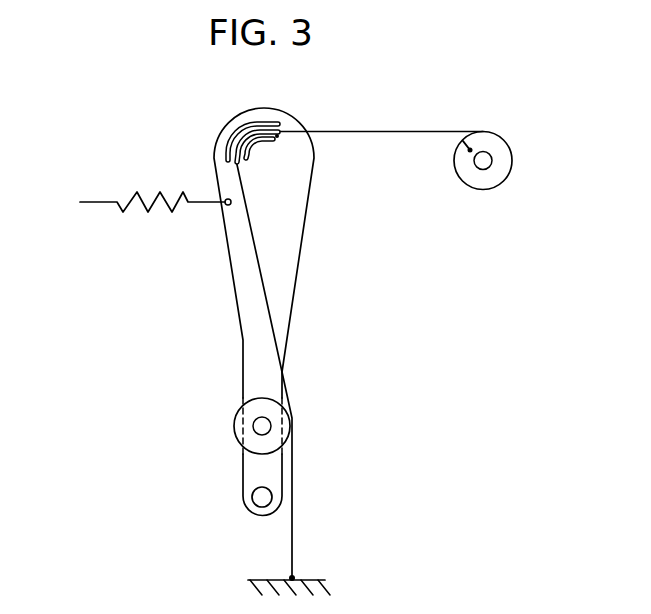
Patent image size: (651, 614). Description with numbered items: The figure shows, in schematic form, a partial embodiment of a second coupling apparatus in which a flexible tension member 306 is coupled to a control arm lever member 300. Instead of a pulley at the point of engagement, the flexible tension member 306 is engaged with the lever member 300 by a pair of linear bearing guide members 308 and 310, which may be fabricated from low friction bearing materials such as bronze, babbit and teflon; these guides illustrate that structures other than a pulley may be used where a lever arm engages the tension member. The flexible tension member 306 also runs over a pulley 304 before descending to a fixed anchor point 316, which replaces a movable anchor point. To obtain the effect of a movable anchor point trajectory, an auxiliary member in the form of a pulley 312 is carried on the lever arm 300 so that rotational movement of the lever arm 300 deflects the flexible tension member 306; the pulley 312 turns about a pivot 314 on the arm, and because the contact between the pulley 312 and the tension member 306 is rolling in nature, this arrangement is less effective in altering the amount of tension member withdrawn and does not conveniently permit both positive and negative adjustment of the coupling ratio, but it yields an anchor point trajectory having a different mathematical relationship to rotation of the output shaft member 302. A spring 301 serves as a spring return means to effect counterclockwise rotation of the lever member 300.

The control arm lever member 300 is at (242, 280).
The spring 301 is at (118, 213).
The output shaft member 302 is at (253, 494).
The pulley 304 is at (496, 137).
The flexible tension member 306 is at (407, 130).
The linear bearing guide member 308 is at (243, 127).
The linear bearing guide member 310 is at (277, 138).
The pulley 312 is at (235, 414).
The pivot 314 is at (254, 427).
The fixed anchor point 316 is at (263, 578).